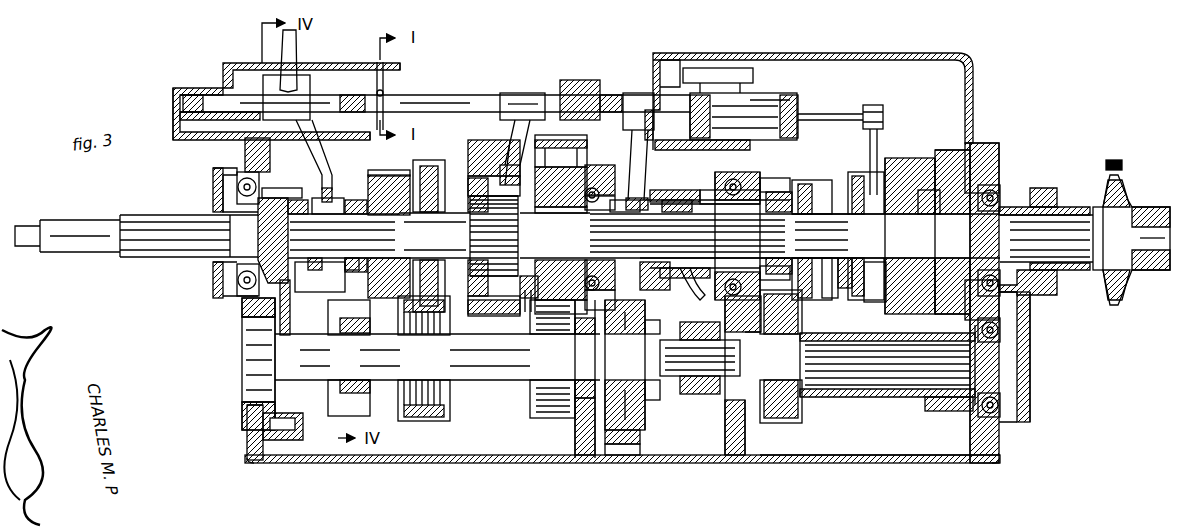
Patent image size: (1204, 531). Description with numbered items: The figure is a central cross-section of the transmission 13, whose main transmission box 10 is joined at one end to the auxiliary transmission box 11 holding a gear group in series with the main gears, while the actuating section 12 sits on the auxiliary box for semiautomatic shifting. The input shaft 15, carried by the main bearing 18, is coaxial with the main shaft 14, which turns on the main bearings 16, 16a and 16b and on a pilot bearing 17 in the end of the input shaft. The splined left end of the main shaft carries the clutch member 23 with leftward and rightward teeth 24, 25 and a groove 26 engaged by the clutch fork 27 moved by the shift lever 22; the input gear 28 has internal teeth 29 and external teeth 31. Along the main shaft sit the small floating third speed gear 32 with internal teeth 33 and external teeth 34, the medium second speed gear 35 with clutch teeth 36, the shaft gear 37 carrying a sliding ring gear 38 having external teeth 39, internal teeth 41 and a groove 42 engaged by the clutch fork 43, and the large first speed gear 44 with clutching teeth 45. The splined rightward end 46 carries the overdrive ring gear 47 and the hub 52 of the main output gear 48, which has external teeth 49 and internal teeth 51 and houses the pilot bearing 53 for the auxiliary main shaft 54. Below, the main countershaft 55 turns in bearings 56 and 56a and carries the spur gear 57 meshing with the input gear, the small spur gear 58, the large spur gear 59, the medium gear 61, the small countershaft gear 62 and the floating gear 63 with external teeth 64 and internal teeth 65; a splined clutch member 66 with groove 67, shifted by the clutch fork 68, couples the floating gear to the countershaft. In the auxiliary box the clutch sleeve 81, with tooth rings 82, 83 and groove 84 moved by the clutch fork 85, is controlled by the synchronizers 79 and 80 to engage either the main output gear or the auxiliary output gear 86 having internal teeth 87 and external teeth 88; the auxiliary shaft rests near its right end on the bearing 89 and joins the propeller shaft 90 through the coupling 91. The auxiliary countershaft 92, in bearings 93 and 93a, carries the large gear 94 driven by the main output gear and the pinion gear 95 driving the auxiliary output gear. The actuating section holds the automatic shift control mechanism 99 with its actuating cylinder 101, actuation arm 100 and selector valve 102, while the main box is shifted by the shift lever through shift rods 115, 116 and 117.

The main transmission box 10 is at (248, 462).
The auxiliary transmission box 11 is at (1003, 458).
The auxiliary box actuating section 12 is at (974, 63).
The transmission 13 is at (232, 378).
The main shaft 14 is at (435, 235).
The input shaft 15 is at (165, 240).
The main bearing 16 is at (592, 192).
The main bearing 16a is at (668, 200).
The main bearing 16b is at (745, 185).
The pilot bearing 17 is at (280, 200).
The main bearing 18 is at (235, 294).
The shift lever 22 is at (282, 44).
The clutch member 23 is at (316, 292).
The leftward external teeth 24 is at (316, 272).
The rightward external teeth 25 is at (335, 198).
The circumferential groove 26 is at (352, 272).
The clutch fork 27 is at (325, 150).
The input gear 28 is at (236, 200).
The internal teeth 29 is at (300, 200).
The external teeth 31 is at (278, 188).
The small floating third speed gear 32 is at (395, 170).
The internal teeth 33 is at (355, 200).
The external teeth 34 is at (380, 175).
The medium floating second speed gear 35 is at (430, 160).
The clutch teeth 36 is at (518, 290).
The shaft gear 37 is at (520, 221).
The ring gear 38 is at (470, 135).
The external teeth 39 is at (488, 140).
The internal teeth 41 is at (470, 195).
The circumferential groove 42 is at (524, 292).
The clutch fork 43 is at (508, 150).
The large floating first speed gear 44 is at (548, 132).
The clutching teeth 45 is at (522, 296).
The rightward end of main shaft 46 is at (694, 230).
The second ring overdrive gear 47 is at (616, 198).
The main output gear 48 is at (800, 180).
The external teeth 49 is at (772, 180).
The internal teeth 51 is at (781, 356).
The hub 52 is at (696, 296).
The pilot bearing 53 is at (780, 192).
The auxiliary main shaft 54 is at (1068, 250).
The main countershaft 55 is at (330, 382).
The bearing 56 is at (250, 340).
The bearing 56a is at (576, 412).
The spur gear 57 is at (288, 448).
The small spur gear 58 is at (350, 398).
The large spur gear 59 is at (408, 420).
The medium gear 61 is at (426, 400).
The small countershaft gear 62 is at (540, 386).
The countershaft floating gear 63 is at (616, 446).
The external teeth 64 is at (635, 450).
The internal teeth 65 is at (656, 398).
The clutch member 66 is at (698, 396).
The circumferential groove 67 is at (690, 394).
The clutch fork 68 is at (637, 165).
The synchronizer 79 is at (824, 330).
The synchronizer 80 is at (905, 158).
The clutch sleeve 81 is at (836, 290).
The leftward ring of external teeth 82 is at (856, 185).
The rightward ring of external teeth 83 is at (900, 292).
The circumferential groove 84 is at (850, 280).
The clutch fork 85 is at (870, 133).
The auxiliary output gear 86 is at (950, 150).
The internal teeth 87 is at (928, 190).
The external teeth 88 is at (982, 143).
The bearing 89 is at (1000, 192).
The propeller shaft 90 is at (1150, 212).
The coupling 91 is at (1115, 158).
The auxiliary countershaft 92 is at (874, 398).
The bearing 93 is at (740, 428).
The bearing 93a is at (1000, 334).
The large gear 94 is at (795, 462).
The pinion gear 95 is at (940, 412).
The automatic shift control mechanism 99 is at (808, 98).
The actuation arm 100 is at (832, 112).
The double acting actuating cylinder 101 is at (772, 100).
The two-way selector valve 102 is at (726, 68).
The shift rod 115 is at (416, 96).
The shift rod 116 is at (505, 95).
The shift rod 117 is at (676, 100).